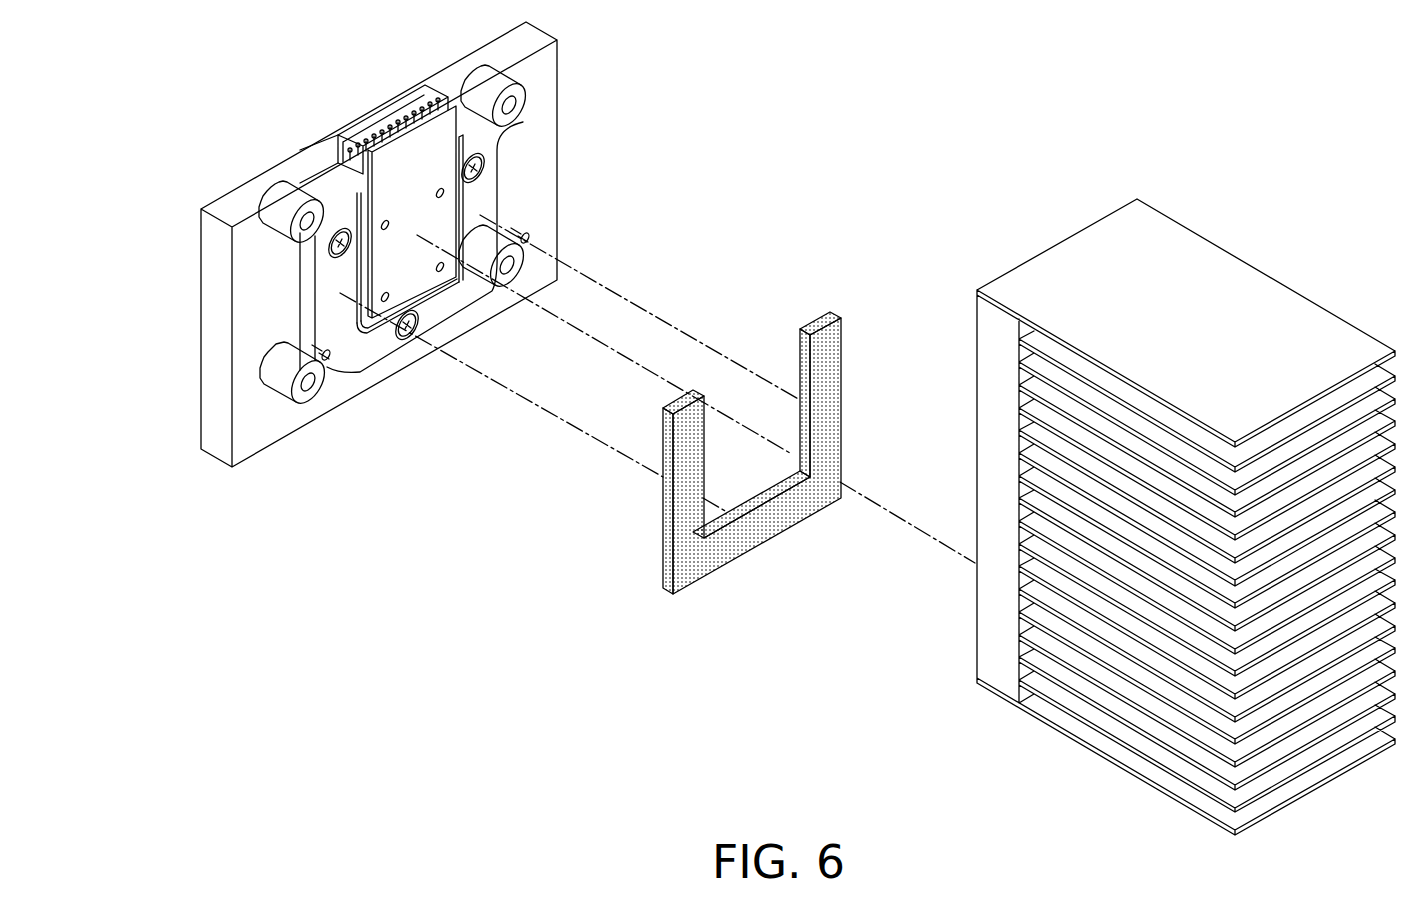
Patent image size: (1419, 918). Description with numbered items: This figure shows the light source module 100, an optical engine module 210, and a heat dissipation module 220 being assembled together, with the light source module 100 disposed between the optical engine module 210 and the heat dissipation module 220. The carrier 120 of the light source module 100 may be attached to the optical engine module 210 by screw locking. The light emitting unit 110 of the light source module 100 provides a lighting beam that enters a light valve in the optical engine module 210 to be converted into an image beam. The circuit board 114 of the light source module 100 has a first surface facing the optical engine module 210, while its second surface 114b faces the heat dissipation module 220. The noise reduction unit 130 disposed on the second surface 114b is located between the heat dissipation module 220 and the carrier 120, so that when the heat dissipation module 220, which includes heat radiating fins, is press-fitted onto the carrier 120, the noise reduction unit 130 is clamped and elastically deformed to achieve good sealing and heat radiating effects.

The light source module 100 is at (1326, 40).
The light emitting unit 110 is at (417, 173).
The circuit board 114 is at (473, 265).
The second surface 114b is at (412, 278).
The carrier 120 is at (483, 202).
The noise reduction unit 130 is at (728, 543).
The optical engine module 210 is at (218, 382).
The heat dissipation module 220 is at (1163, 233).